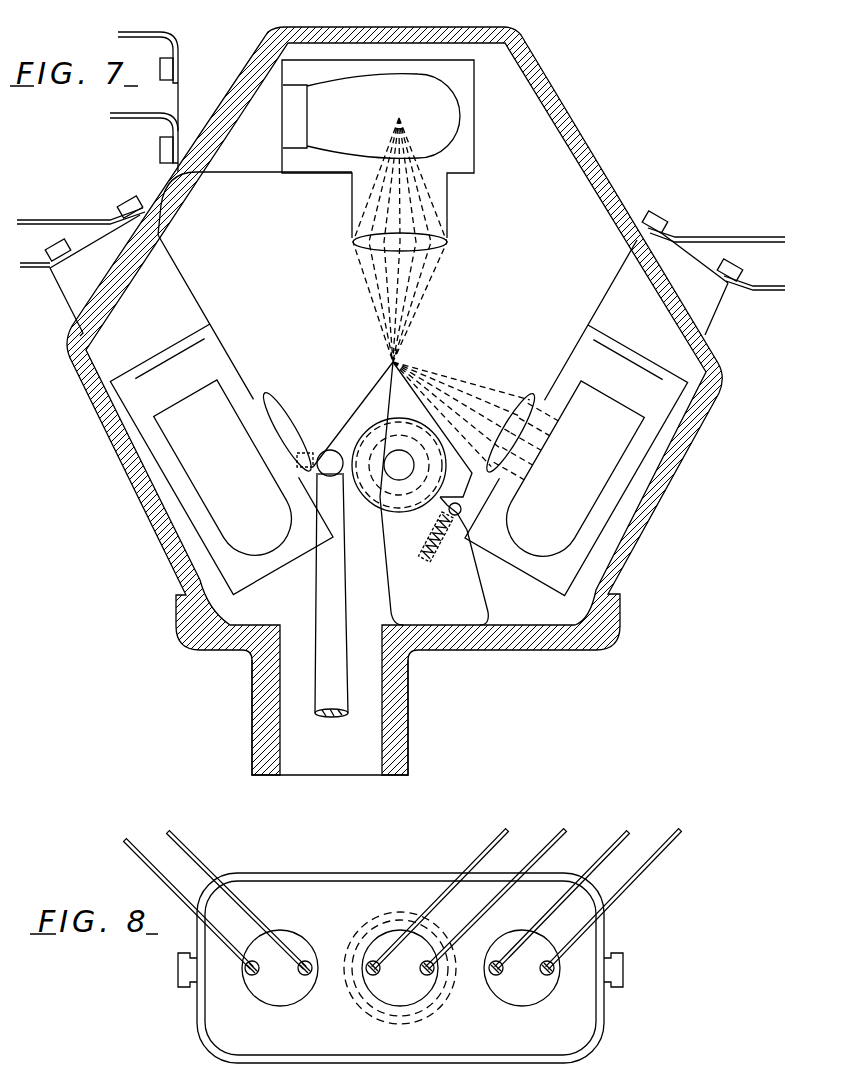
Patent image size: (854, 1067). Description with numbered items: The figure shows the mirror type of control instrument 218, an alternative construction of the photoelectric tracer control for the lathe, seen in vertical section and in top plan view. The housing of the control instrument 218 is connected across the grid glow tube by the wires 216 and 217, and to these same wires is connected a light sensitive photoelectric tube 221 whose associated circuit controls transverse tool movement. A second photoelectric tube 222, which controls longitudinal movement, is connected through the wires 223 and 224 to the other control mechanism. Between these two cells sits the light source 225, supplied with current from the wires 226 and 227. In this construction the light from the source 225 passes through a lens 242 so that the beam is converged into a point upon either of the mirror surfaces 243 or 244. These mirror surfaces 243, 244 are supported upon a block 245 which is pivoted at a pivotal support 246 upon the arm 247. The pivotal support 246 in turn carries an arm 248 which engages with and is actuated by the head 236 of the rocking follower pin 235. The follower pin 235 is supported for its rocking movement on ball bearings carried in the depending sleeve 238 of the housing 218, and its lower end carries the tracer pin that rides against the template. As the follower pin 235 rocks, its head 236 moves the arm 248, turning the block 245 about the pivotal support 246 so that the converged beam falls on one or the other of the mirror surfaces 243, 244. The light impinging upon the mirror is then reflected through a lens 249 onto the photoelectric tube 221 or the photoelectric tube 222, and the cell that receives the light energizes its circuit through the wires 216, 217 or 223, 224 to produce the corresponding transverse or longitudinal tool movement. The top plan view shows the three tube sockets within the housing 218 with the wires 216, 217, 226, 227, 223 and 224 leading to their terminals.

In FIG. 7, the wire 216 is at (28, 268).
In FIG. 8, the wire 216 is at (137, 860).
In FIG. 7, the wire 217 is at (68, 222).
In FIG. 8, the wire 217 is at (190, 845).
In FIG. 7, the control instrument 218 is at (128, 487).
In FIG. 8, the control instrument 218 is at (203, 1037).
In FIG. 7, the photoelectric tube 221 is at (227, 535).
In FIG. 7, the photoelectric tube 222 is at (600, 500).
In FIG. 7, the wire 223 is at (710, 236).
In FIG. 8, the wire 223 is at (630, 840).
In FIG. 7, the wire 224 is at (760, 289).
In FIG. 8, the wire 224 is at (660, 858).
In FIG. 7, the light source 225 is at (440, 117).
In FIG. 7, the wire 226 is at (131, 119).
In FIG. 8, the wire 226 is at (490, 838).
In FIG. 7, the wire 227 is at (150, 33).
In FIG. 8, the wire 227 is at (545, 842).
In FIG. 7, the rocking follower pin 235 is at (333, 677).
In FIG. 7, the head 236 is at (333, 478).
In FIG. 7, the depending sleeve 238 is at (258, 713).
In FIG. 7, the lens 242 is at (422, 248).
In FIG. 7, the mirror surface 243 is at (415, 375).
In FIG. 7, the mirror surface 244 is at (388, 368).
In FIG. 7, the block 245 is at (364, 502).
In FIG. 7, the pivotal support 246 is at (396, 463).
In FIG. 7, the arm 247 is at (472, 593).
In FIG. 7, the arm 248 is at (328, 440).
In FIG. 7, the lens 249 is at (287, 405).